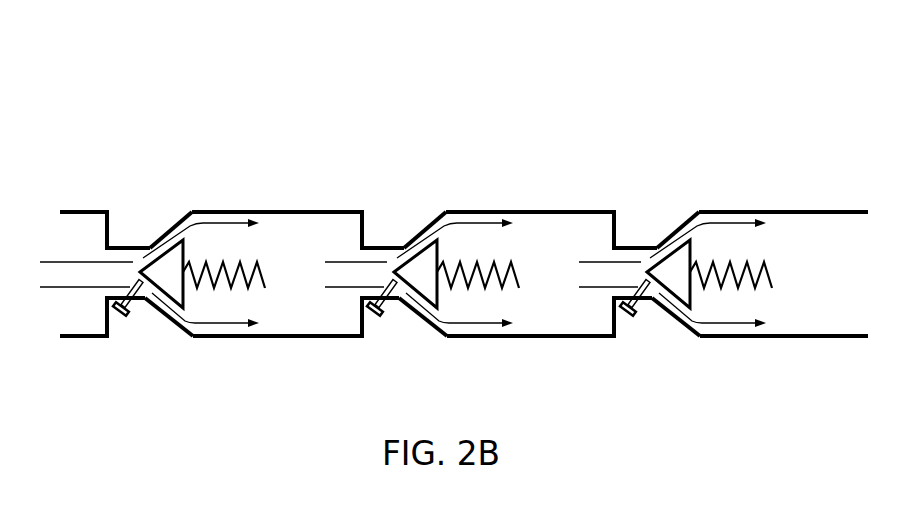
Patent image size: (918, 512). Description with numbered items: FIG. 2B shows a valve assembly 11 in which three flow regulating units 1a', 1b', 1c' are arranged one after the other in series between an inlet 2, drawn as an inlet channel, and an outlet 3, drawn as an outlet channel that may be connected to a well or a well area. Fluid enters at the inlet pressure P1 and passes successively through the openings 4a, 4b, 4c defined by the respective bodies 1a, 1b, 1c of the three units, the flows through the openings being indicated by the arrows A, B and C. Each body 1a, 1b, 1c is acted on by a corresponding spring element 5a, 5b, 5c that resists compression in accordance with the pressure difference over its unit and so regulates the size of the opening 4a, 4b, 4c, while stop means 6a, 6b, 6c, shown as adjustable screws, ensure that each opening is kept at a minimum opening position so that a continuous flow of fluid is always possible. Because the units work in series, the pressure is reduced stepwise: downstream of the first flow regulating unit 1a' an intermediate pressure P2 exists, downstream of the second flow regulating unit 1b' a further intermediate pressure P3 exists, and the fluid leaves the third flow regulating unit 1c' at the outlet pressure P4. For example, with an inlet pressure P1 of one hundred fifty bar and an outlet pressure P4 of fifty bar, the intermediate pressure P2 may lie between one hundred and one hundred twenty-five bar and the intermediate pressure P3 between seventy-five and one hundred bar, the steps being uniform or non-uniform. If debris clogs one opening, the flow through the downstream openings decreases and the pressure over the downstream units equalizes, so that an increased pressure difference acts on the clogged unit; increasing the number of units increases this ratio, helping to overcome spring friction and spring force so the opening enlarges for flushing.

The flow regulating unit 1a' is at (213, 211).
The flow regulating unit 1b' is at (475, 206).
The flow regulating unit 1c' is at (717, 211).
The body 1a is at (160, 308).
The body 1b is at (415, 308).
The body 1c is at (668, 308).
The inlet 2 is at (85, 313).
The outlet 3 is at (547, 313).
The opening 4a is at (167, 236).
The opening 4b is at (422, 255).
The opening 4c is at (674, 257).
The spring element 5a is at (243, 285).
The spring element 5b is at (478, 327).
The spring 5c is at (731, 327).
The stop means 6a is at (122, 318).
The stop means 6b is at (372, 337).
The stop means 6c is at (626, 337).
The valve assembly 11 is at (383, 176).
The inlet pressure P1 is at (85, 209).
The intermediate pressure P2 is at (292, 208).
The intermediate pressure P3 is at (547, 208).
The outlet pressure P4 is at (798, 210).
The flow A is at (204, 222).
The flow B is at (455, 246).
The flow C is at (708, 247).